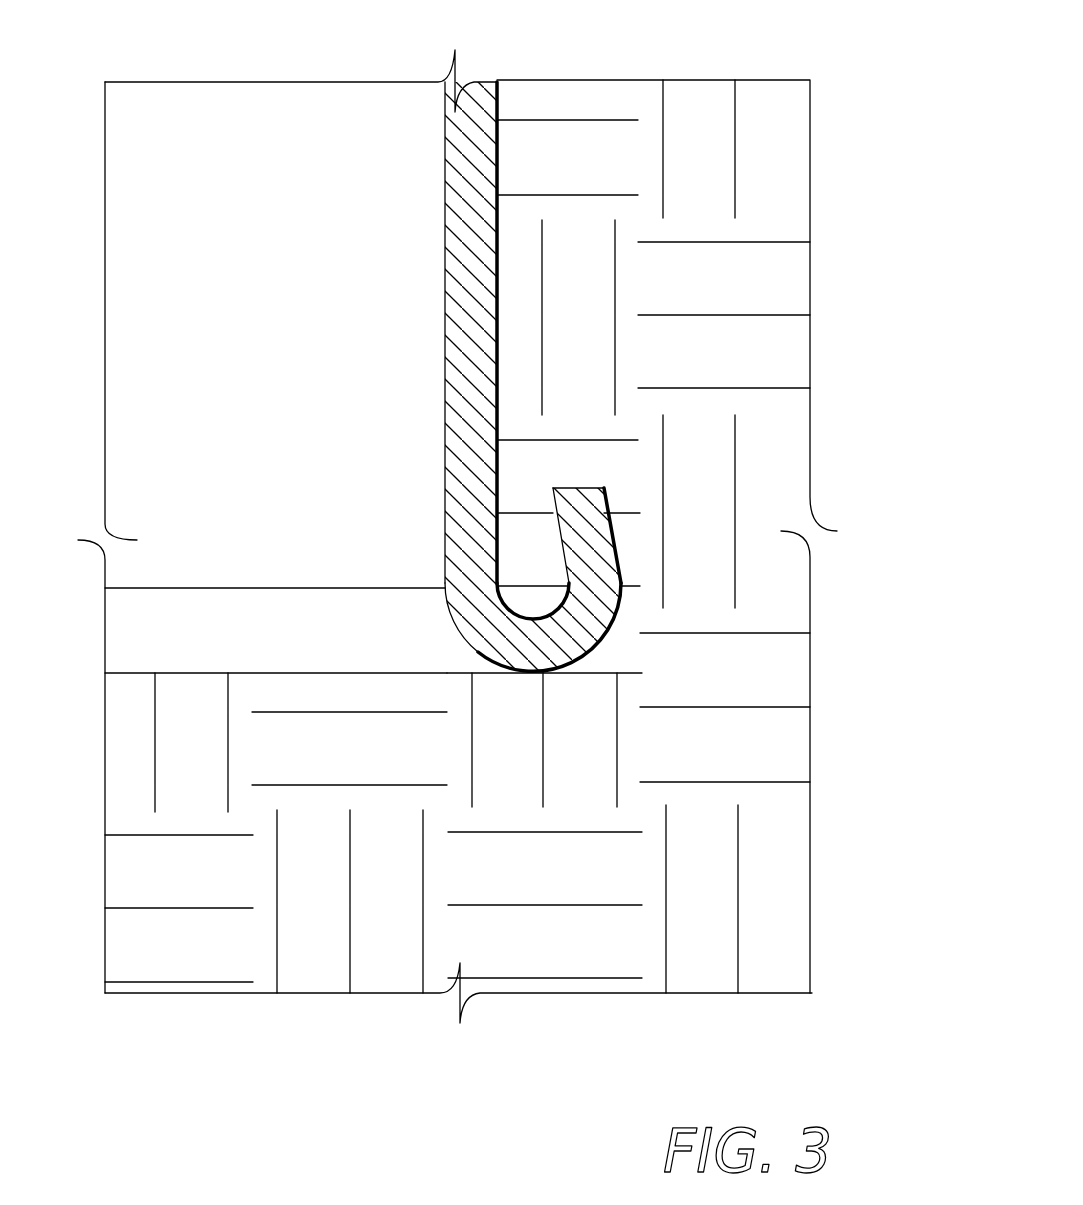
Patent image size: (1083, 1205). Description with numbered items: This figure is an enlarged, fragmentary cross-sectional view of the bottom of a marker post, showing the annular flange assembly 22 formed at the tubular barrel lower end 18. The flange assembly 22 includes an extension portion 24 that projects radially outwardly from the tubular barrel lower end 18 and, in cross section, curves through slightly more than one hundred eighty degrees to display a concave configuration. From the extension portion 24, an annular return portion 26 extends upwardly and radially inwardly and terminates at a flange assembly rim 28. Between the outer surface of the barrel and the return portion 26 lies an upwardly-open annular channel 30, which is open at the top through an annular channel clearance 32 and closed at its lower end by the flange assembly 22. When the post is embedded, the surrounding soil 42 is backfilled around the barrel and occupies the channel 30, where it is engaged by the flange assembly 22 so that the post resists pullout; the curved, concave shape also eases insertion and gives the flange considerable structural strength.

The tubular barrel lower end 18 is at (138, 675).
The surrounding soil 42 is at (727, 80).
The annular flange assembly 22 is at (567, 667).
The extension portion 24 is at (542, 673).
The return portion 26 is at (618, 557).
The flange assembly rim 28 is at (583, 487).
The channel 30 is at (562, 530).
The annular channel clearance 32 is at (455, 443).